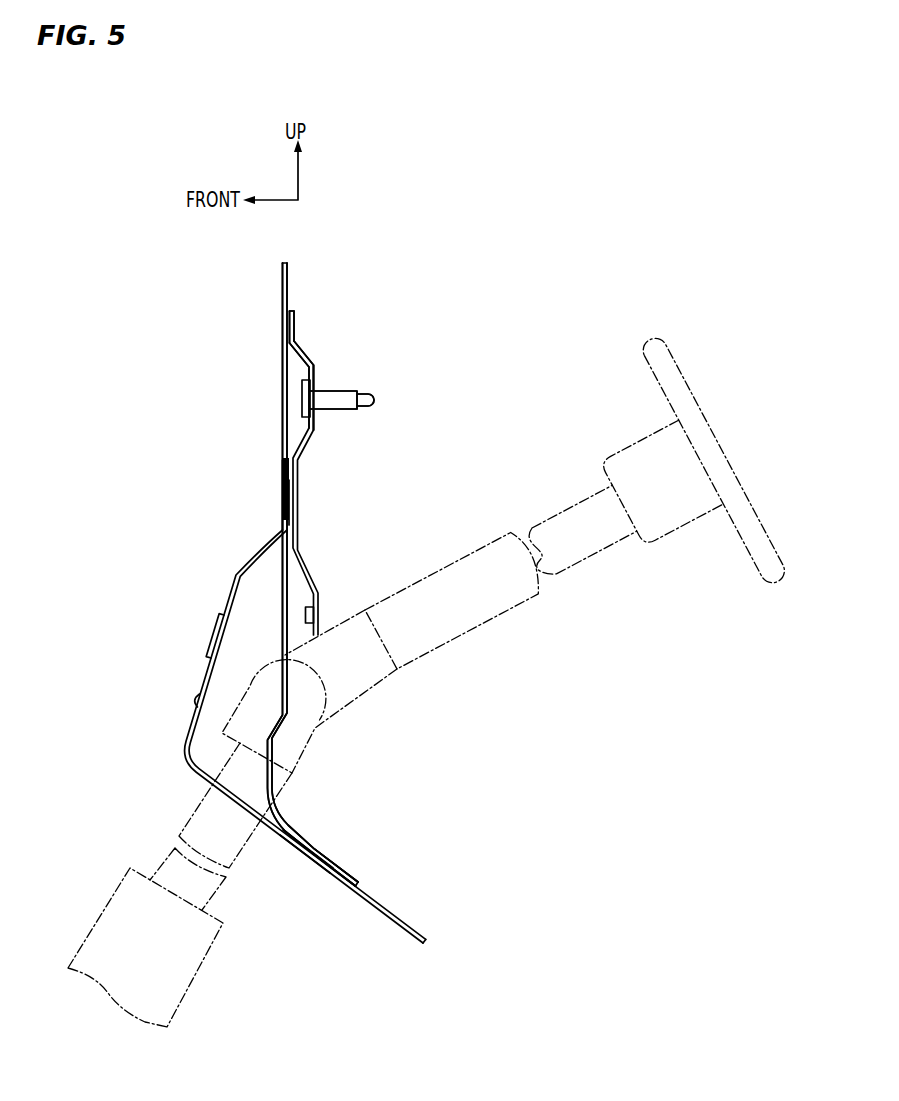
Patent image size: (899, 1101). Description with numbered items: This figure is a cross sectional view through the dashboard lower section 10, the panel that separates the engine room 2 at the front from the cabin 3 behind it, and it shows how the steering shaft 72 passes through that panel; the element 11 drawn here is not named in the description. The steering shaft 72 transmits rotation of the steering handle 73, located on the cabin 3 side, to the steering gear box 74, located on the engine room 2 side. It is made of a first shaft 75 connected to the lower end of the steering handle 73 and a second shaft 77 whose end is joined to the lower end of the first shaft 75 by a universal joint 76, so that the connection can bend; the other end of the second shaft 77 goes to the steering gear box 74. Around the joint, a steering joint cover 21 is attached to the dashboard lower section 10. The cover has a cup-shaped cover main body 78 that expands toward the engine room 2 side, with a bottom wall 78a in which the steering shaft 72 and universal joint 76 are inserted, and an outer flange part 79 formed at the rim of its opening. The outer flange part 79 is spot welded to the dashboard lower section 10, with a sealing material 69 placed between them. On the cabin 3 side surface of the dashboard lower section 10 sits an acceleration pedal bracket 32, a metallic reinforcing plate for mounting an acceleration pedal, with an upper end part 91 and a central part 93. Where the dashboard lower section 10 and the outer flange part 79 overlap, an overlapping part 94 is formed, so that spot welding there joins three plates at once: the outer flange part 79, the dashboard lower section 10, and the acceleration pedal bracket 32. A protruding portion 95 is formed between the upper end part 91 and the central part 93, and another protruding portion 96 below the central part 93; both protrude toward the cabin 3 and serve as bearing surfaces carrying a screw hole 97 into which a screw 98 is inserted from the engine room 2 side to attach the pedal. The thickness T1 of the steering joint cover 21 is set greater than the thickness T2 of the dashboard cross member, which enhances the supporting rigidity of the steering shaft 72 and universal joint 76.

The engine room 2 is at (156, 333).
The cabin 3 is at (498, 339).
The dashboard lower section 10 is at (299, 259).
The panel body 11 is at (282, 380).
The steering joint cover 21 is at (288, 629).
The acceleration pedal bracket 32 is at (314, 347).
The sealing material 69 is at (291, 495).
The steering shaft 72 is at (320, 722).
The steering handle 73 is at (683, 378).
The steering gear box 74 is at (186, 990).
The first shaft 75 is at (494, 618).
The universal joint 76 is at (385, 690).
The second shaft 77 is at (187, 818).
The cover main body 78 is at (226, 606).
The bottom wall 78a is at (289, 848).
The outer flange part 79 is at (283, 505).
The upper end part 91 is at (294, 311).
The central part 93 is at (298, 483).
The overlapping part 94 is at (283, 470).
The protruding portion 95 is at (318, 375).
The protruding portion 96 is at (321, 605).
The screw hole 97 is at (316, 394).
The screw 98 is at (358, 410).
The thickness of the steering joint cover T1 is at (232, 694).
The thickness of the dashboard cross member T2 is at (297, 642).